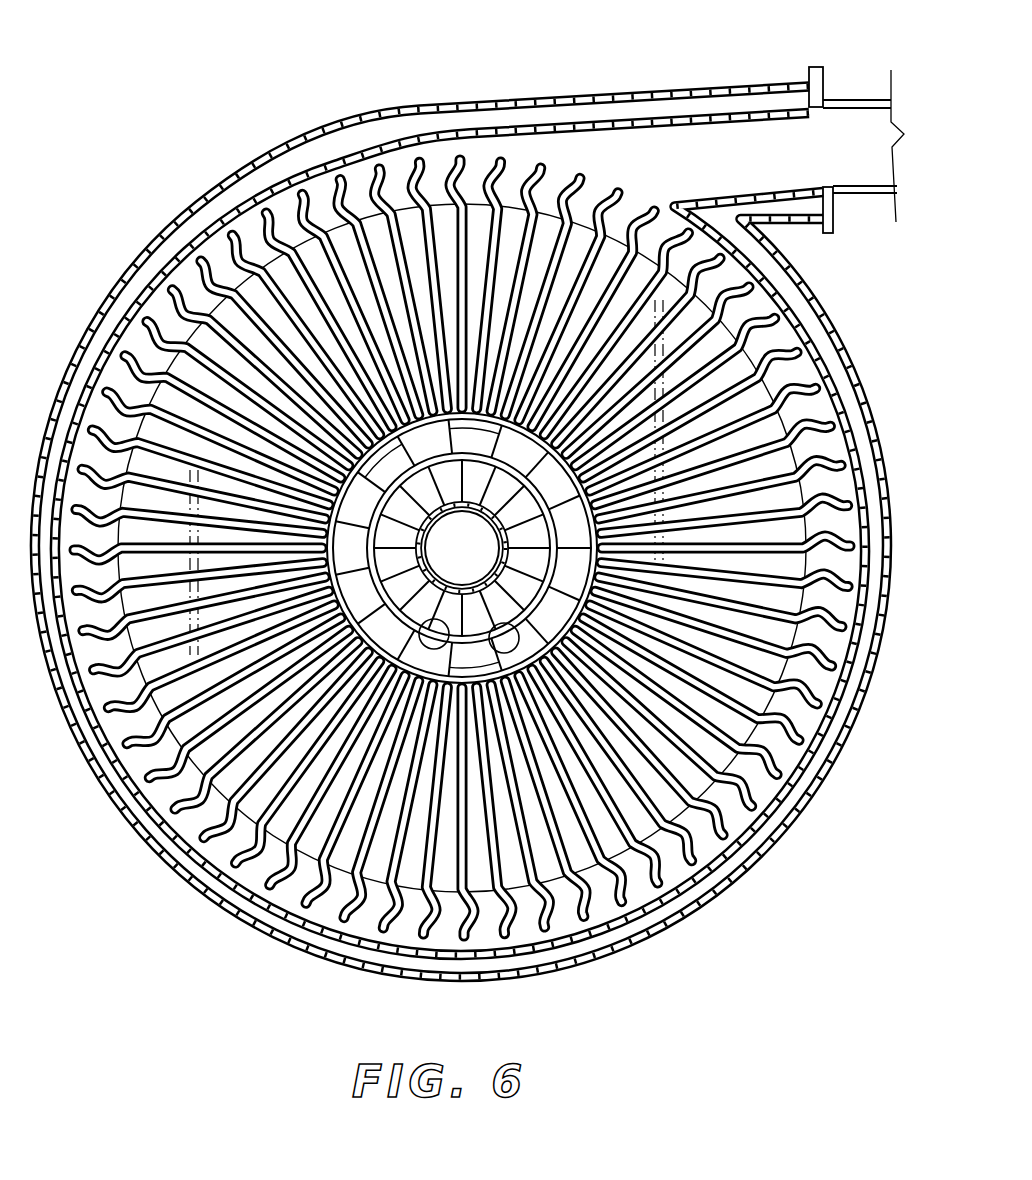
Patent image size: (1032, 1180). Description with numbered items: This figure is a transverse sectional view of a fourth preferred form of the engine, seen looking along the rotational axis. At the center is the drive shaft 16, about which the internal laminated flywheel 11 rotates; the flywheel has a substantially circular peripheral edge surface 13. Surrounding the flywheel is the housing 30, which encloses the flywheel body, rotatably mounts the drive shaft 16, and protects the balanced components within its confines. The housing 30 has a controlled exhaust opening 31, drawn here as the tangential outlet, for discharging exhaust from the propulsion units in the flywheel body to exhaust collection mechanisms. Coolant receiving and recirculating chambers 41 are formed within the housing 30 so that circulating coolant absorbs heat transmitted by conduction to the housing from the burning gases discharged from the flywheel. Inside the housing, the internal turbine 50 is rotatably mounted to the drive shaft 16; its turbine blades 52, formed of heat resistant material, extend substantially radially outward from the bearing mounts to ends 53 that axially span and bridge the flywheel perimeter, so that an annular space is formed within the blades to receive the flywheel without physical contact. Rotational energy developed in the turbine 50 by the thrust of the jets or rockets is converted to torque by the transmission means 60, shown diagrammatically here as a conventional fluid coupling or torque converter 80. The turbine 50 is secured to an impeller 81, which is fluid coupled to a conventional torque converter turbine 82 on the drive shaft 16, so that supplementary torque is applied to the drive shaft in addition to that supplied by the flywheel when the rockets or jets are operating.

The internal laminated flywheel 11 is at (268, 238).
The peripheral edge surface 13 is at (400, 886).
The drive shaft 16 is at (448, 532).
The housing 30 is at (779, 866).
The exhaust opening 31 is at (848, 153).
The coolant receiving and recirculating chambers 41 is at (818, 294).
The internal turbine 50 is at (808, 371).
The turbine blades 52 is at (215, 832).
The blade ends 53 is at (690, 875).
The transmission means 60 is at (514, 512).
The fluid coupling or torque converter 80 is at (666, 688).
The impeller 81 is at (498, 432).
The torque converter turbine 82 is at (498, 663).